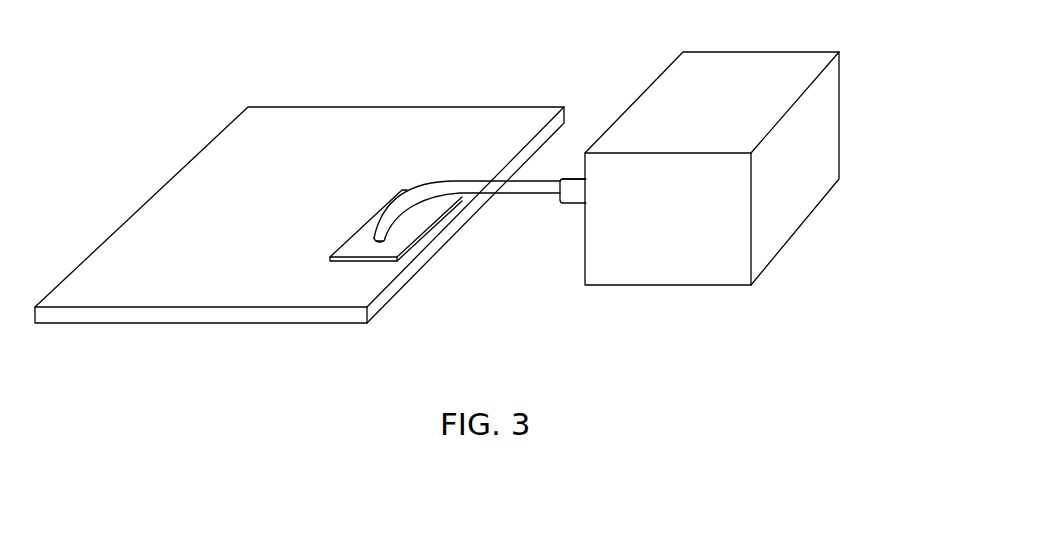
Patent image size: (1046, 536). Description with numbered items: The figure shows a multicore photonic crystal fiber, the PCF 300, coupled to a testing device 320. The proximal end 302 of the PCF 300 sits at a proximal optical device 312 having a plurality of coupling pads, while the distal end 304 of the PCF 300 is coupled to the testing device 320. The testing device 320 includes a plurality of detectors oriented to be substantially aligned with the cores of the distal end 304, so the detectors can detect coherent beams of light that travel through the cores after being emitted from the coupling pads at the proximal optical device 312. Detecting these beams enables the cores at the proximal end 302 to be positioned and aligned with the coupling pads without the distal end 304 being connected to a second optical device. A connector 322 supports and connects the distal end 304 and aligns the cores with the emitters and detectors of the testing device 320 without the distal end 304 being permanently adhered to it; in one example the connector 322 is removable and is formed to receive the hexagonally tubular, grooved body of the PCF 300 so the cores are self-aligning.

The PCF 300 is at (438, 182).
The proximal end 302 is at (375, 236).
The distal end 304 is at (557, 178).
The proximal optical device 312 is at (345, 250).
The testing device 320 is at (802, 63).
The connector 322 is at (573, 176).